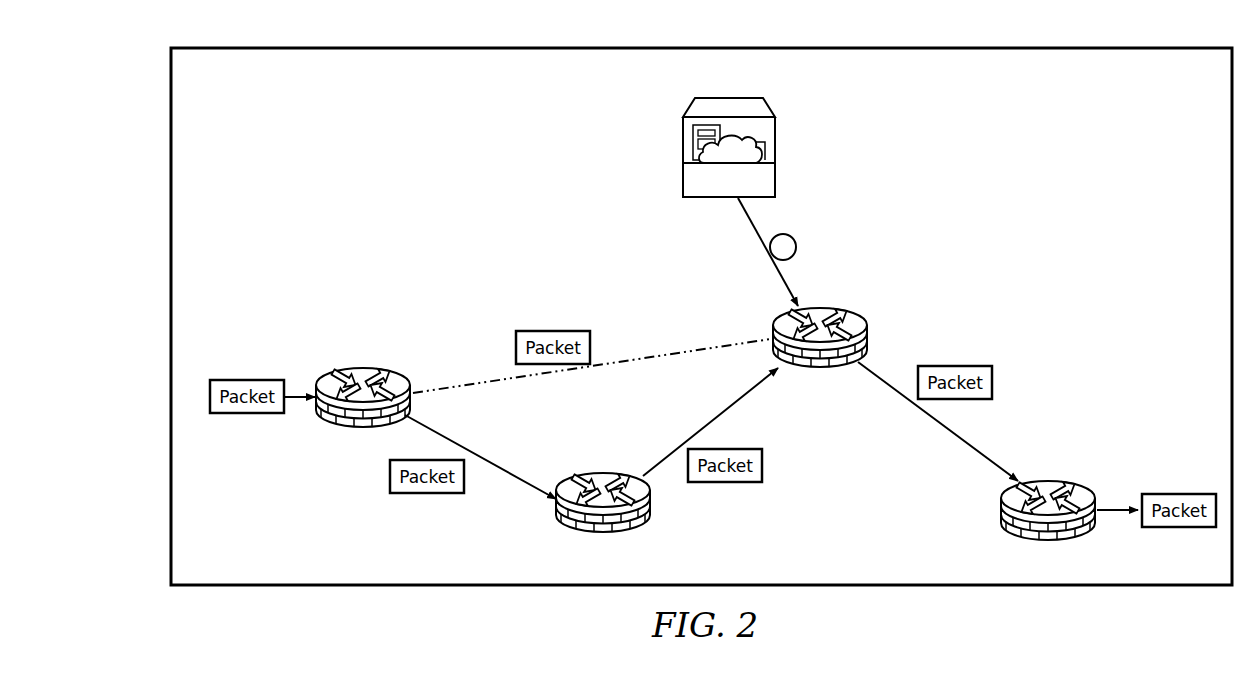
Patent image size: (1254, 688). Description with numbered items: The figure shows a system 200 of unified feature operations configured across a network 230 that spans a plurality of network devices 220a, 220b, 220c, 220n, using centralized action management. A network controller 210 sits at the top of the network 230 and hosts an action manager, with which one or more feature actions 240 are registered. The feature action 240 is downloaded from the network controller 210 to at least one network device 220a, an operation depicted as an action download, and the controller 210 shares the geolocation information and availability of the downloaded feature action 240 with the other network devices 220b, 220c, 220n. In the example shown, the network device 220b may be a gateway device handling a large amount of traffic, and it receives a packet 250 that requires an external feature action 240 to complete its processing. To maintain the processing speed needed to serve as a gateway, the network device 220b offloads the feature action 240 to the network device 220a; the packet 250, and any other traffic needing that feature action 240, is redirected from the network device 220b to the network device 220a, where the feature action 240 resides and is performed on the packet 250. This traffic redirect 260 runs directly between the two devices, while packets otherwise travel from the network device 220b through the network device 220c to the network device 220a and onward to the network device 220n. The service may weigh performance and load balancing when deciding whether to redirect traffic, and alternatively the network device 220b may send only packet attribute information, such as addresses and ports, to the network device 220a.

The system 200 is at (1036, 27).
The network controller 210 is at (683, 157).
The network device 220a is at (868, 336).
The network device 220b is at (347, 426).
The network device 220c is at (651, 507).
The network device 220n is at (1083, 538).
The network 230 is at (703, 74).
The feature action 240 is at (795, 240).
The packet 250 is at (248, 414).
The traffic redirect 260 is at (642, 360).